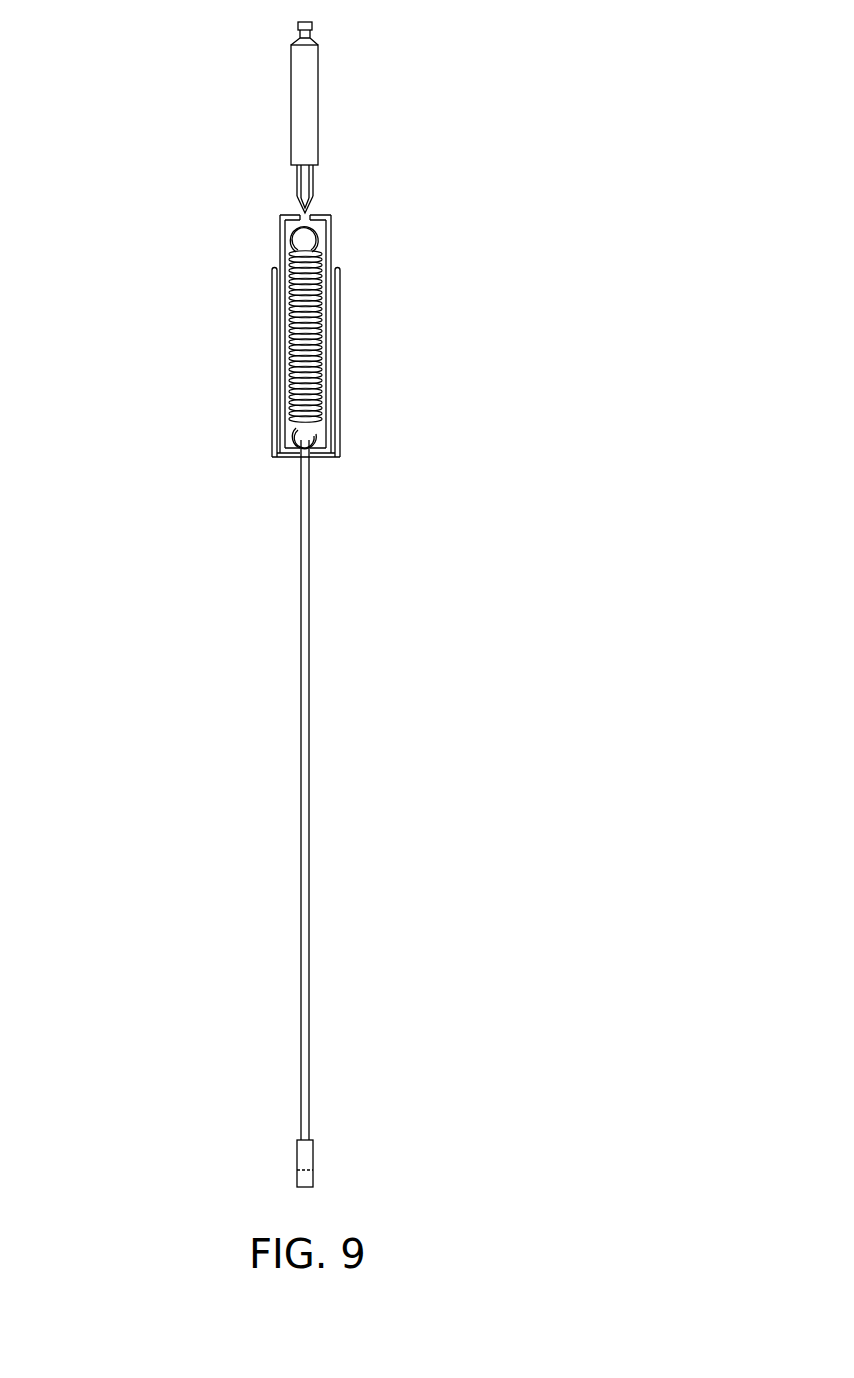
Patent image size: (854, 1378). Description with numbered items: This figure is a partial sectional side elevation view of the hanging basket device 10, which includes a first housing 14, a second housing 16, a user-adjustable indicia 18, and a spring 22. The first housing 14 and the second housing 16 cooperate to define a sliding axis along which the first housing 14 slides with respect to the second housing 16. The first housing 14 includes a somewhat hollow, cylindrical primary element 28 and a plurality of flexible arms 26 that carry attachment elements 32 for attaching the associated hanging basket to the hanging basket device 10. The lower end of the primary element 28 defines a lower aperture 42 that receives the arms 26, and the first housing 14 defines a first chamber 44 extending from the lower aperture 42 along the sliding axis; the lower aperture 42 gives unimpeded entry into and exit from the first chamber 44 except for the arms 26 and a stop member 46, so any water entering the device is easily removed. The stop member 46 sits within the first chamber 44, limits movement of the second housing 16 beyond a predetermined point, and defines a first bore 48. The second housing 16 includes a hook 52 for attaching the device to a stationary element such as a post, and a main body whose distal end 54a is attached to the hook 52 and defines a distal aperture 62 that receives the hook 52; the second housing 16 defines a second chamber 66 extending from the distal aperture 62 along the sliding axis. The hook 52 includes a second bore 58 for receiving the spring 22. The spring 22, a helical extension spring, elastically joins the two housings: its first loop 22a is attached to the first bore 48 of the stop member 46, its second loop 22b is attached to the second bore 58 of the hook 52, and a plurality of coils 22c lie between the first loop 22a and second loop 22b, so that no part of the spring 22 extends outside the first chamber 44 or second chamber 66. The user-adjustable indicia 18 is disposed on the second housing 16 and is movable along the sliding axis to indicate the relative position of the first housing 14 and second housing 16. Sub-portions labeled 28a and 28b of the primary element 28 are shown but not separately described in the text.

The hanging basket device 10 is at (97, 125).
The first housing 14 is at (483, 382).
The second housing 16 is at (483, 120).
The user-adjustable indicia 18 is at (340, 255).
The spring 22 is at (353, 355).
The first loop 22a is at (277, 475).
The second loop 22b is at (260, 315).
The plurality of coils 22c is at (268, 243).
The plurality of arms 26 is at (308, 791).
The primary element 28 is at (338, 390).
The sleeve proximal end 28a is at (348, 278).
The sleeve distal end 28b is at (350, 450).
The attachment elements 32 is at (333, 1165).
The lower aperture 42 is at (314, 490).
The first chamber 44 is at (300, 440).
The stop member 46 is at (318, 478).
The first bore 48 is at (290, 495).
The hook 52 is at (310, 72).
The distal end 54a is at (340, 218).
The second bore 58 is at (325, 205).
The distal aperture 62 is at (278, 208).
The second chamber 66 is at (282, 250).